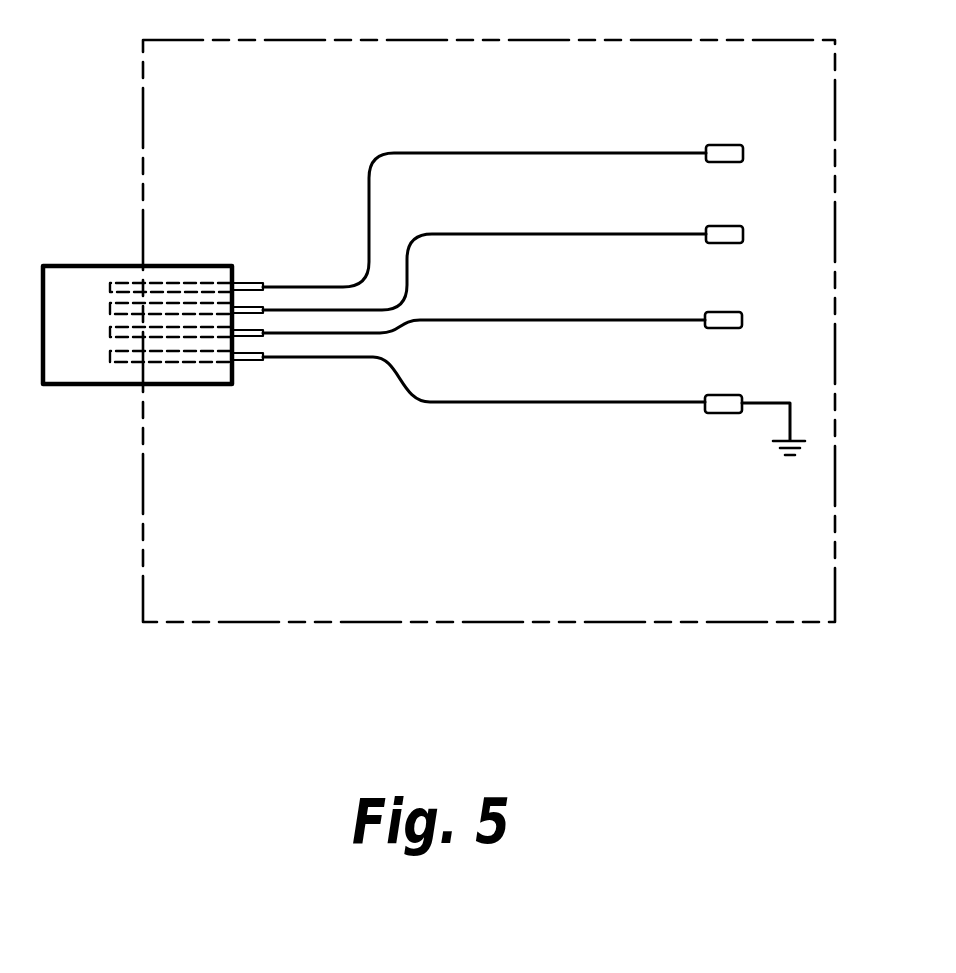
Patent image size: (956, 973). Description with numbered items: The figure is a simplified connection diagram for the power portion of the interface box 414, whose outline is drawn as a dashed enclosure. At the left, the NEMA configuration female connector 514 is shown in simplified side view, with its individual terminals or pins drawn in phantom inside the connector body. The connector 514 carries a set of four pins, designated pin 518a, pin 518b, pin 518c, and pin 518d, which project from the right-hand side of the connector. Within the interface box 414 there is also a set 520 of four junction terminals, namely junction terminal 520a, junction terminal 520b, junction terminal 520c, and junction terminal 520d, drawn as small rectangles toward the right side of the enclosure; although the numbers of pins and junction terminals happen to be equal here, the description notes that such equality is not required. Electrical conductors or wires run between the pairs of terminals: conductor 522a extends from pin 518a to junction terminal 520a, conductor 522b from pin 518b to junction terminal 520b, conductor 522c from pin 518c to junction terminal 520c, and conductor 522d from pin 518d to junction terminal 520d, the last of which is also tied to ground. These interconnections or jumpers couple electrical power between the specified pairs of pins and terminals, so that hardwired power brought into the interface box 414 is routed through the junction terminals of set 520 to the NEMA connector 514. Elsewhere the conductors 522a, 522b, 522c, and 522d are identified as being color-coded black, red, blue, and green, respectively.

The interface box 414 is at (489, 331).
The NEMA configuration female connector 514 is at (73, 266).
The pin 518a is at (200, 279).
The pin 518b is at (222, 289).
The pin 518c is at (265, 336).
The pin 518d is at (182, 364).
The set of junction terminals 520 is at (596, 128).
The junction terminal 520a is at (723, 145).
The junction terminal 520b is at (727, 226).
The junction terminal 520c is at (720, 312).
The junction terminal 520d is at (722, 413).
The electrical conductor 522a is at (432, 153).
The electrical conductor 522b is at (478, 234).
The electrical conductor 522c is at (473, 320).
The electrical conductor 522d is at (473, 402).